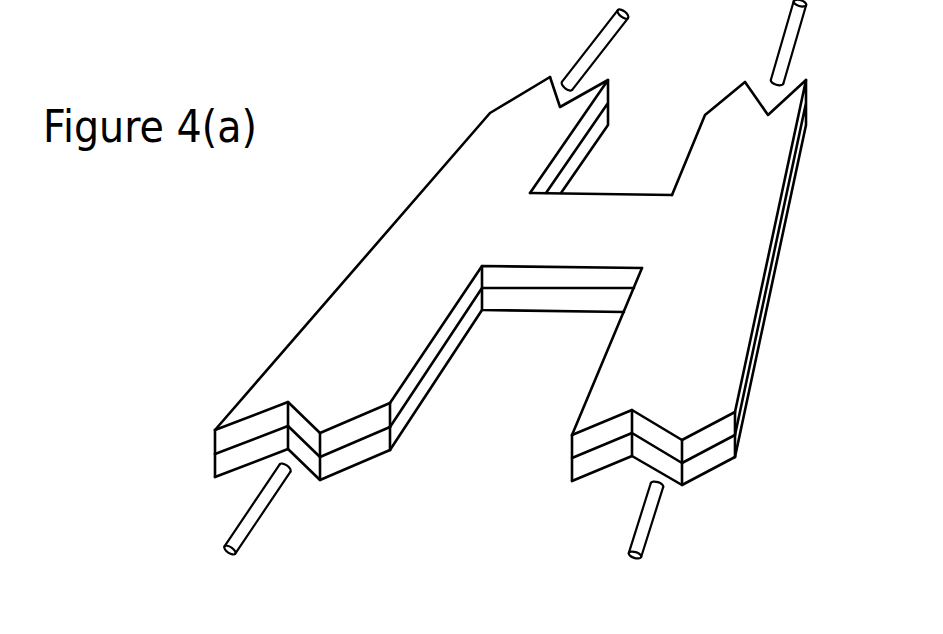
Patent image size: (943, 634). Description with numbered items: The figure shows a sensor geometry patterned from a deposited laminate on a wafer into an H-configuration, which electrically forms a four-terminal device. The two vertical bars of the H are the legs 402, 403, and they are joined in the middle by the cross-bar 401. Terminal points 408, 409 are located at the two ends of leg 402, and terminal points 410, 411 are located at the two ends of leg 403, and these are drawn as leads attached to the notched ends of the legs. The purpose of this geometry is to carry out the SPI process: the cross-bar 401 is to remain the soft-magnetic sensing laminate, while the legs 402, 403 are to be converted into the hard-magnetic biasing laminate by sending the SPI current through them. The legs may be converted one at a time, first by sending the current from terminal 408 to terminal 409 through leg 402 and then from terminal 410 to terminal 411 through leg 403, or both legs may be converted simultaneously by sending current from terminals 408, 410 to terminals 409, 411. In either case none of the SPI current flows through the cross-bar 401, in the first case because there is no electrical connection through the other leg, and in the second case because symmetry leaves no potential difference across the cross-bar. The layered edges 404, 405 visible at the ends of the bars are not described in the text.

The cross-bar 401 is at (505, 292).
The leg 402 is at (728, 324).
The leg 403 is at (392, 292).
The upper (superconductor) layer 404 is at (211, 447).
The lower (insulator) layer 405 is at (211, 458).
The terminal point 408 is at (654, 541).
The terminal point 409 is at (810, 27).
The terminal point 410 is at (273, 519).
The terminal point 411 is at (581, 50).